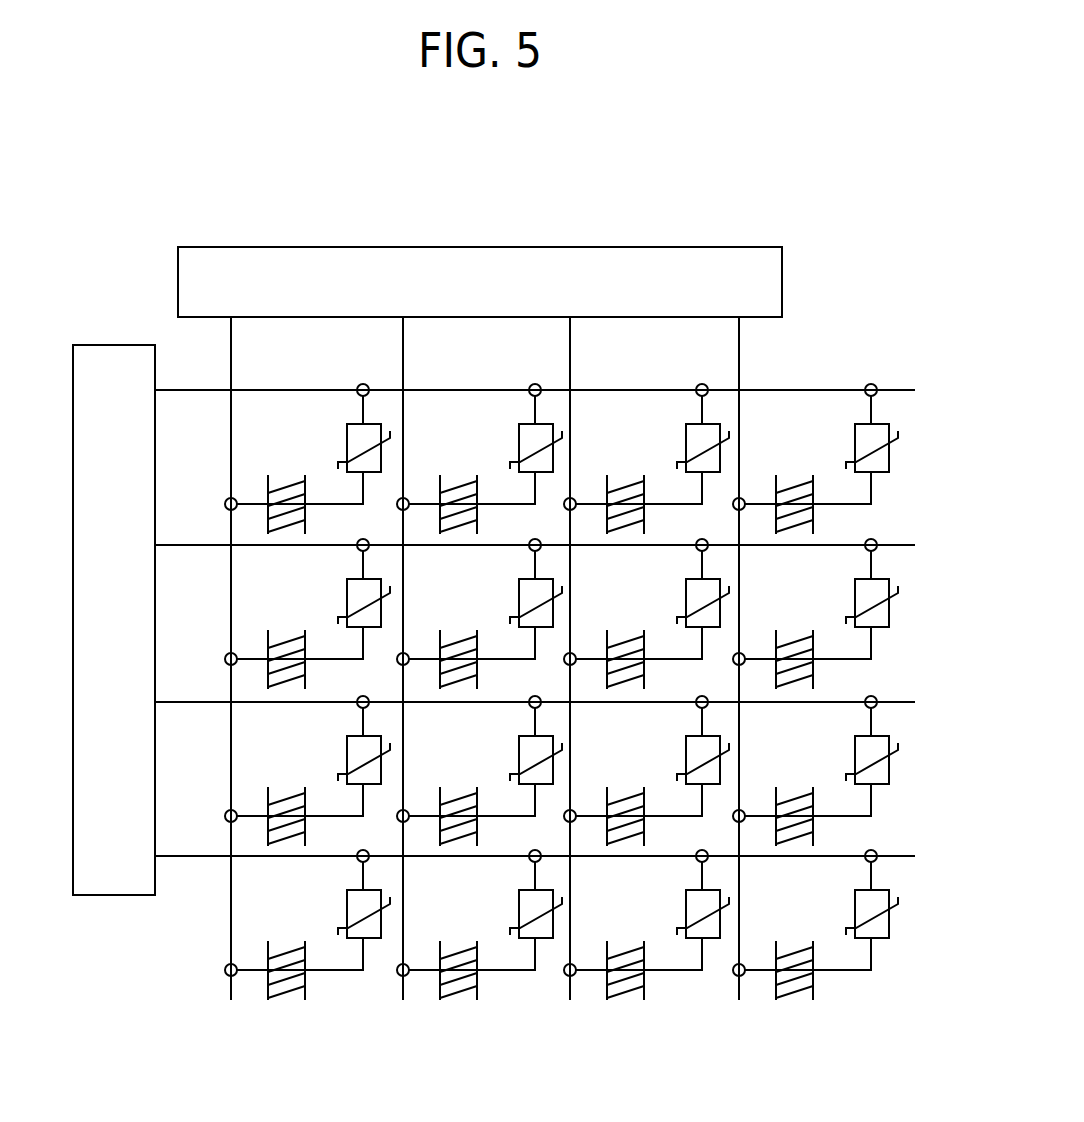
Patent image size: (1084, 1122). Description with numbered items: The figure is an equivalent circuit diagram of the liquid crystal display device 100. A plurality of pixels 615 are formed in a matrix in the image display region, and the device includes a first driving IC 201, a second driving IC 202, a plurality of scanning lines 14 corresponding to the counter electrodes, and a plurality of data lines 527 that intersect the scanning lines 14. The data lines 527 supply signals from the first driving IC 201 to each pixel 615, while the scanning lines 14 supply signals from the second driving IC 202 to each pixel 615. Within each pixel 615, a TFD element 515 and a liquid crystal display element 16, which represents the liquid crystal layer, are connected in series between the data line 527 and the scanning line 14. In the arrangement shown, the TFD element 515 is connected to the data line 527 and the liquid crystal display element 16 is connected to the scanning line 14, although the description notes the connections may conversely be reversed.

The liquid crystal display device 100 is at (870, 333).
The first driving IC 201 is at (118, 345).
The second driving IC 202 is at (487, 247).
The scanning line 14 is at (231, 346).
The data line 527 is at (178, 852).
The TFD element 515 is at (373, 938).
The liquid crystal display element 16 is at (287, 996).
The pixel 615 is at (739, 1008).